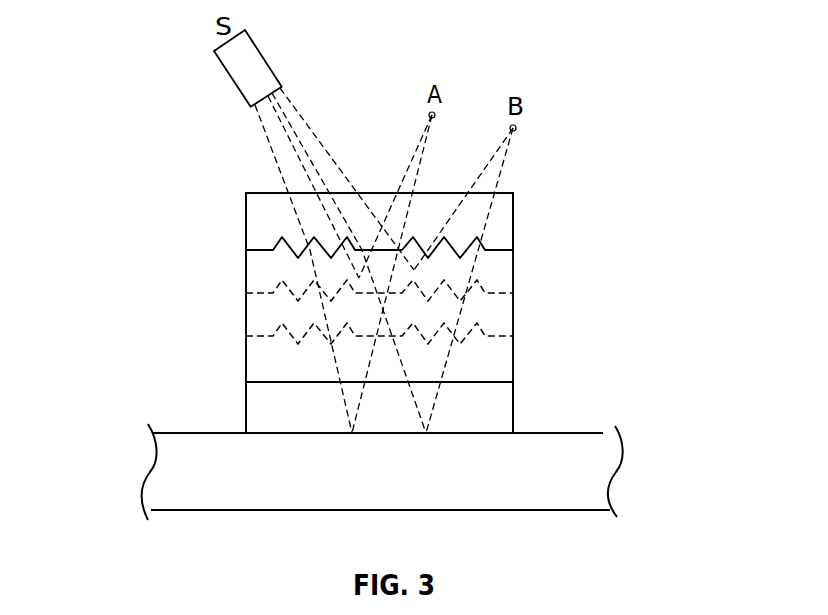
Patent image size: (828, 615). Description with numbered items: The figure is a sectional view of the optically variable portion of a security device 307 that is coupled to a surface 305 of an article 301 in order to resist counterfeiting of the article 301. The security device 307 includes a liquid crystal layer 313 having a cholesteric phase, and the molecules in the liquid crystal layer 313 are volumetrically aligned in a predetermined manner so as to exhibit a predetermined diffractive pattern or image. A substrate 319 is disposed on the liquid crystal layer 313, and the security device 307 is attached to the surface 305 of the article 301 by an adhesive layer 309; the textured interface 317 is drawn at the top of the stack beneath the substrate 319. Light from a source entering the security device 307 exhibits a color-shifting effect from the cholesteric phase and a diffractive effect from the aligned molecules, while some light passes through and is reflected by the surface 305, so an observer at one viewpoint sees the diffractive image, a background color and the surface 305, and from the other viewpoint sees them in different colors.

The article 301 is at (150, 404).
The surface 305 is at (603, 433).
The security device 307 is at (234, 286).
The adhesive layer 309 is at (513, 405).
The liquid crystal layer 313 is at (523, 250).
The textured surface layer 317 is at (272, 244).
The substrate 319 is at (513, 215).